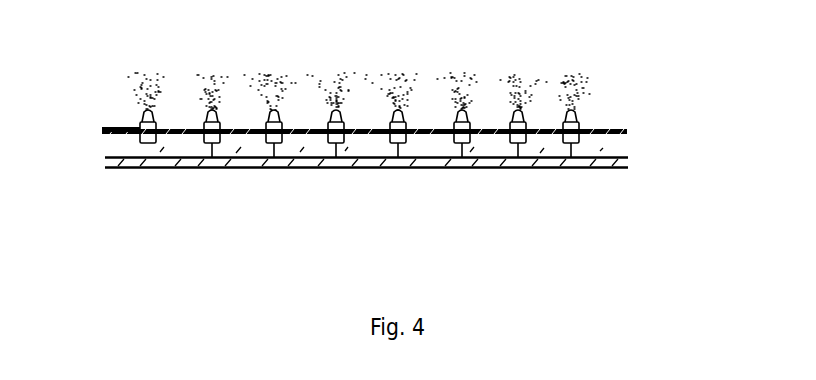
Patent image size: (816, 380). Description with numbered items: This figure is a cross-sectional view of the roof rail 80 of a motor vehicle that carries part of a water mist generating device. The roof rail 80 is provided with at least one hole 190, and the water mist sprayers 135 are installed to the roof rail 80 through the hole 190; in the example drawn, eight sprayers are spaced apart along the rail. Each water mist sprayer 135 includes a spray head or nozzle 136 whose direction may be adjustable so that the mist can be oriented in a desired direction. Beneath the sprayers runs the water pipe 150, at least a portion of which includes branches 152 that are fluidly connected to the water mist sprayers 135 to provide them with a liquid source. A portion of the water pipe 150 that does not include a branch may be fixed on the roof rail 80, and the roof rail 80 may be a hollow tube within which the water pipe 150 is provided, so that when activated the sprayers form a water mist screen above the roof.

The roof rail 80 is at (627, 131).
The spray head or nozzle 136 is at (207, 117).
The water mist sprayer 135 is at (221, 143).
The branch 152 is at (577, 152).
The water pipe 150 is at (628, 167).
The hole 190 is at (140, 130).